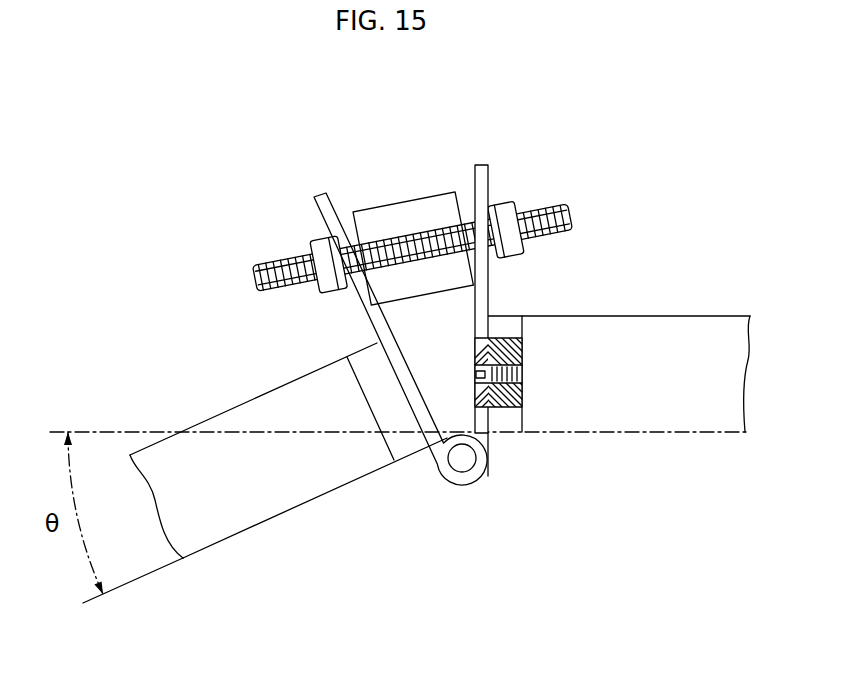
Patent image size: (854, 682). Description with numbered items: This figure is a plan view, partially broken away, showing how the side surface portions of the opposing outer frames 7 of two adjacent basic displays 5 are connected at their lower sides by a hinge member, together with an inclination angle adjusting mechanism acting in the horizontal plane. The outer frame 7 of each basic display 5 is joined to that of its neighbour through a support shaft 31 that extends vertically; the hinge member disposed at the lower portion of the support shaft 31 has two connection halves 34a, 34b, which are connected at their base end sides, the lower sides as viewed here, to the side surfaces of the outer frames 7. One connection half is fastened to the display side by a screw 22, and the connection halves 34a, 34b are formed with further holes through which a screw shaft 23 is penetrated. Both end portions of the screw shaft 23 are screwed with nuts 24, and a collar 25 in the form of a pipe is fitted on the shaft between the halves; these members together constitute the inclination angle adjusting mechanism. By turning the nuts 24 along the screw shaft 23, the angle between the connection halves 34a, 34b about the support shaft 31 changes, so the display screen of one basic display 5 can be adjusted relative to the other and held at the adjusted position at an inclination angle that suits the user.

The basic display 5 is at (298, 508).
The outer frame 7 is at (410, 443).
The screw 22 is at (515, 350).
The screw shaft 23 is at (572, 212).
The nut 24 is at (322, 256).
The collar 25 is at (383, 222).
The support shaft 31 is at (461, 460).
The connection half 34a is at (483, 177).
The connection half 34b is at (318, 196).